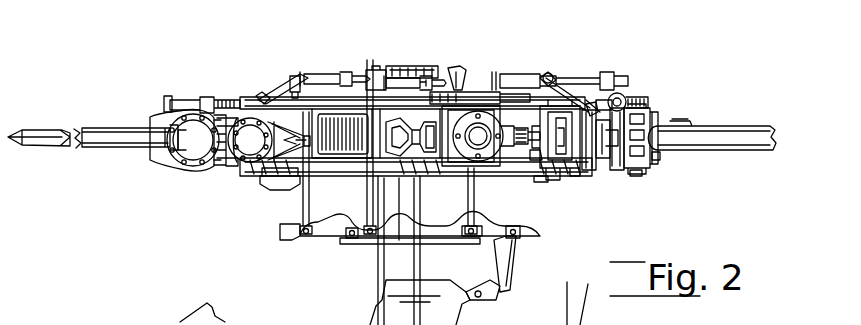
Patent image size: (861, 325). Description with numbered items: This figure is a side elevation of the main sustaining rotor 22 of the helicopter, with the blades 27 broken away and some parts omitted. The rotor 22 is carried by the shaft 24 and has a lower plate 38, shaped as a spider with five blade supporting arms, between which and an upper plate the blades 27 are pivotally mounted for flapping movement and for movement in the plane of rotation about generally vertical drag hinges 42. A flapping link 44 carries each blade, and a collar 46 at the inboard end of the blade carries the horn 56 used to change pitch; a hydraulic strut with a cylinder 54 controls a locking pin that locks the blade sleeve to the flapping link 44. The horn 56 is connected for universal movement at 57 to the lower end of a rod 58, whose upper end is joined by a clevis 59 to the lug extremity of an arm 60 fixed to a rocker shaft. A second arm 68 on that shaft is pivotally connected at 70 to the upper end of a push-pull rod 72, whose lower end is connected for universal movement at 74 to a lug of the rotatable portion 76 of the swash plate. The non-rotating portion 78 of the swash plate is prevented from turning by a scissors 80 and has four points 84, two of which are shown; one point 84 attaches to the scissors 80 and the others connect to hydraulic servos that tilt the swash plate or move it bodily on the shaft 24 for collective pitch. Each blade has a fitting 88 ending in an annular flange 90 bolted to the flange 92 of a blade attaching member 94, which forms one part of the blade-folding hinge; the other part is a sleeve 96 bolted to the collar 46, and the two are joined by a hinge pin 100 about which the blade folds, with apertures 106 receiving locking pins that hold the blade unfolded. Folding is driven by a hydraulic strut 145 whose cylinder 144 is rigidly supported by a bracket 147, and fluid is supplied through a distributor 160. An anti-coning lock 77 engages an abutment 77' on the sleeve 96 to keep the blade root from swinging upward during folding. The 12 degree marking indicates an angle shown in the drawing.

The main sustaining rotor 22 is at (456, 48).
The shaft 24 is at (376, 280).
The blades 27 is at (190, 321).
The lower plate 38 is at (265, 88).
The drag hinges 42 is at (545, 180).
The flapping link 44 is at (572, 100).
The collar 46 is at (235, 168).
The cylinder 54 is at (604, 168).
The horn 56 is at (262, 166).
The universal connection 57 is at (298, 182).
The rod 58 is at (322, 100).
The clevis 59 is at (300, 70).
The arm 60 is at (303, 72).
The second arm 68 is at (376, 66).
The pivotal connection 70 is at (384, 88).
The push-pull rod 72 is at (370, 182).
The universal connection 74 is at (484, 234).
The rotatable portion of swash plate 76 is at (330, 236).
The anti-coning lock 77 is at (569, 78).
The abutment 77' is at (610, 71).
The non-rotating portion of swash plate 78 is at (380, 240).
The scissors 80 is at (470, 276).
The points 84 is at (352, 236).
The fitting 88 is at (660, 120).
The annular flange 90 is at (654, 100).
The flange 92 is at (484, 168).
The blade attaching member 94 is at (658, 156).
The sleeve 96 is at (622, 168).
The hinge pin 100 is at (636, 170).
The apertures 106 is at (437, 302).
The cylinder 144 is at (197, 80).
The hydraulic strut 145 is at (152, 68).
The bracket 147 is at (430, 84).
The distributor 160 is at (392, 70).
The angle 12 is at (589, 317).